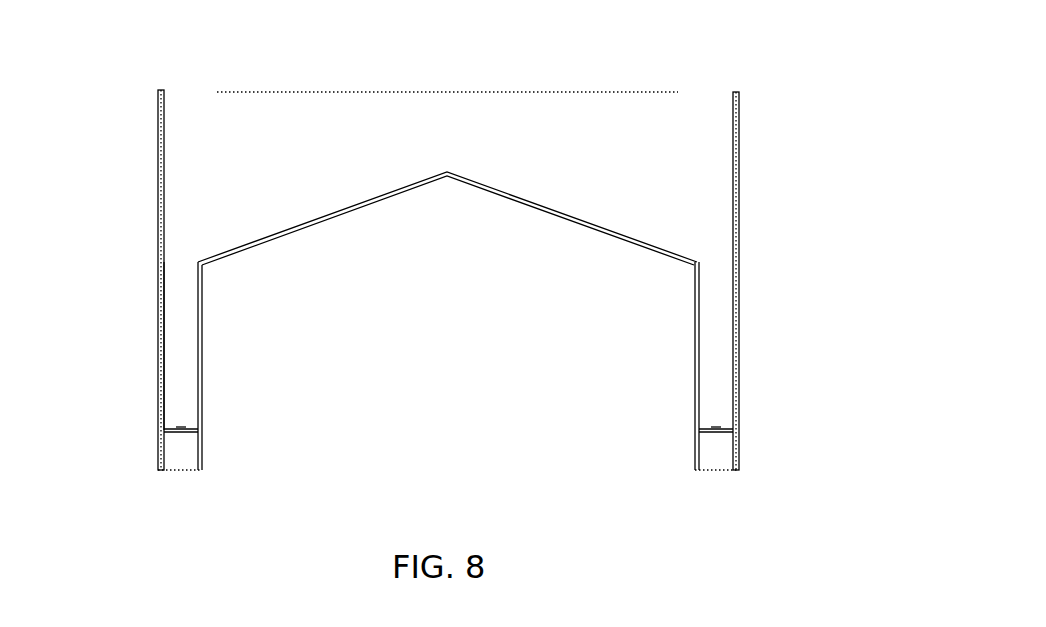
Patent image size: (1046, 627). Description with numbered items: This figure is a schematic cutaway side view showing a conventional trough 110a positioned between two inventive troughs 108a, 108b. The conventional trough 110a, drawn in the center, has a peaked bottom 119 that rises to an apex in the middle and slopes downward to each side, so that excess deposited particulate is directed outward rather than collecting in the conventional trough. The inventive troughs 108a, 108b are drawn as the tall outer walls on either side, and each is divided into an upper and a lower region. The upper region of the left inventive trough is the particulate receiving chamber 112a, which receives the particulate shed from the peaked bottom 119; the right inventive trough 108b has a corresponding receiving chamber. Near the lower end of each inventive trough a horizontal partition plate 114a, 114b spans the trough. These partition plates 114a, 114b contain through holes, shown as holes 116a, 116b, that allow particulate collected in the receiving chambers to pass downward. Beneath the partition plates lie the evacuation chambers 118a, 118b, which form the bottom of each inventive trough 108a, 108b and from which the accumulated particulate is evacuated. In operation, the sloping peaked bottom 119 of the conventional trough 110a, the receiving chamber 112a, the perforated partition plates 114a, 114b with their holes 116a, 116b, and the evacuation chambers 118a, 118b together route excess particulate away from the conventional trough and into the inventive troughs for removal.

The inventive trough 108a is at (183, 305).
The inventive trough 108b is at (717, 305).
The conventional trough 110a is at (500, 120).
The particulate receiving chamber 112a is at (172, 370).
The partition plate 114a is at (193, 430).
The partition plate 114b is at (722, 362).
The hole 116a is at (178, 430).
The hole 116b is at (713, 427).
The evacuation chamber 118a is at (167, 450).
The evacuation chamber 118b is at (716, 456).
The peaked bottom 119 is at (600, 230).